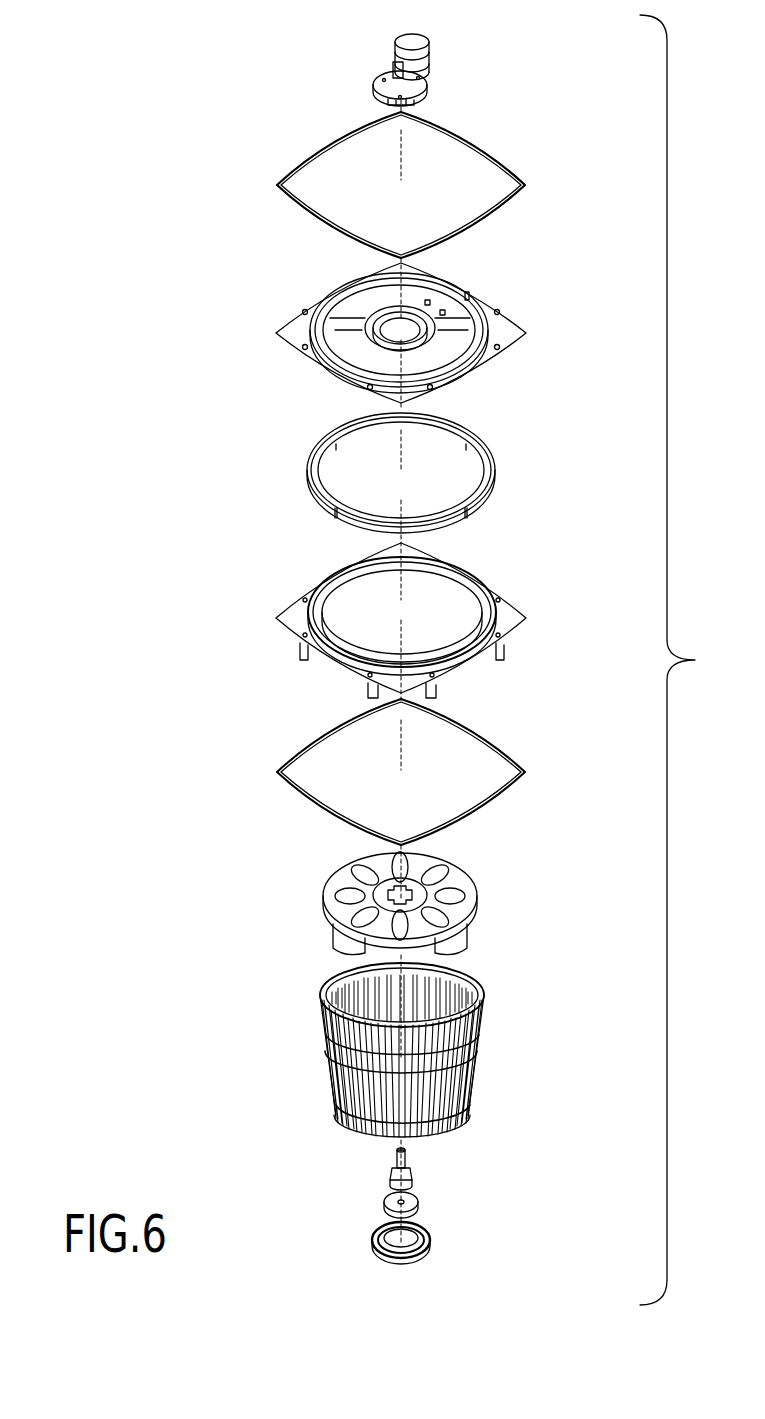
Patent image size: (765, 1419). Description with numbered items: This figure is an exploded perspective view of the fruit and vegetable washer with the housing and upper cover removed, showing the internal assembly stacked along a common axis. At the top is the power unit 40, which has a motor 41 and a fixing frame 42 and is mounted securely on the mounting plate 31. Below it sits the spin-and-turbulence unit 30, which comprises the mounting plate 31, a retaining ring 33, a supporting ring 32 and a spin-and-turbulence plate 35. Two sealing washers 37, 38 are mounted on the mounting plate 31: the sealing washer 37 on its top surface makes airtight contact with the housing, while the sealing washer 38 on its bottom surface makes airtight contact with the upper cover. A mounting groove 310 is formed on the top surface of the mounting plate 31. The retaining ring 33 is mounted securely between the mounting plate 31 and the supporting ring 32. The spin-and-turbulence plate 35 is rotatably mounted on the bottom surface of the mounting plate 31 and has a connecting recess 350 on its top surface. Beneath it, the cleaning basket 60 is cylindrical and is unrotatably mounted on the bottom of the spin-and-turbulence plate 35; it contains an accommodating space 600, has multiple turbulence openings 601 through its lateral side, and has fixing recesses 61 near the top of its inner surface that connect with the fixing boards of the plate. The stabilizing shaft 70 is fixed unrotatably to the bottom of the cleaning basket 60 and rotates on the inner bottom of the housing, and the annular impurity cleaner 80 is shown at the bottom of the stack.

The spin-and-turbulence unit 30 is at (258, 113).
The mounting plate 31 is at (534, 318).
The mounting groove 310 is at (418, 320).
The supporting ring 32 is at (531, 634).
The retaining ring 33 is at (506, 496).
The spin-and-turbulence plate 35 is at (491, 916).
The connecting recess 350 is at (420, 893).
The sealing washer 37 is at (520, 202).
The sealing washer 38 is at (523, 796).
The power unit 40 is at (452, 70).
The motor 41 is at (433, 34).
The fixing frame 42 is at (372, 79).
The cleaning basket 60 is at (491, 1096).
The fixing recesses 61 is at (338, 984).
The accommodating space 600 is at (425, 1032).
The turbulence openings 601 is at (466, 1112).
The stabilizing shaft 70 is at (380, 1168).
The annular impurity cleaner 80 is at (437, 1249).